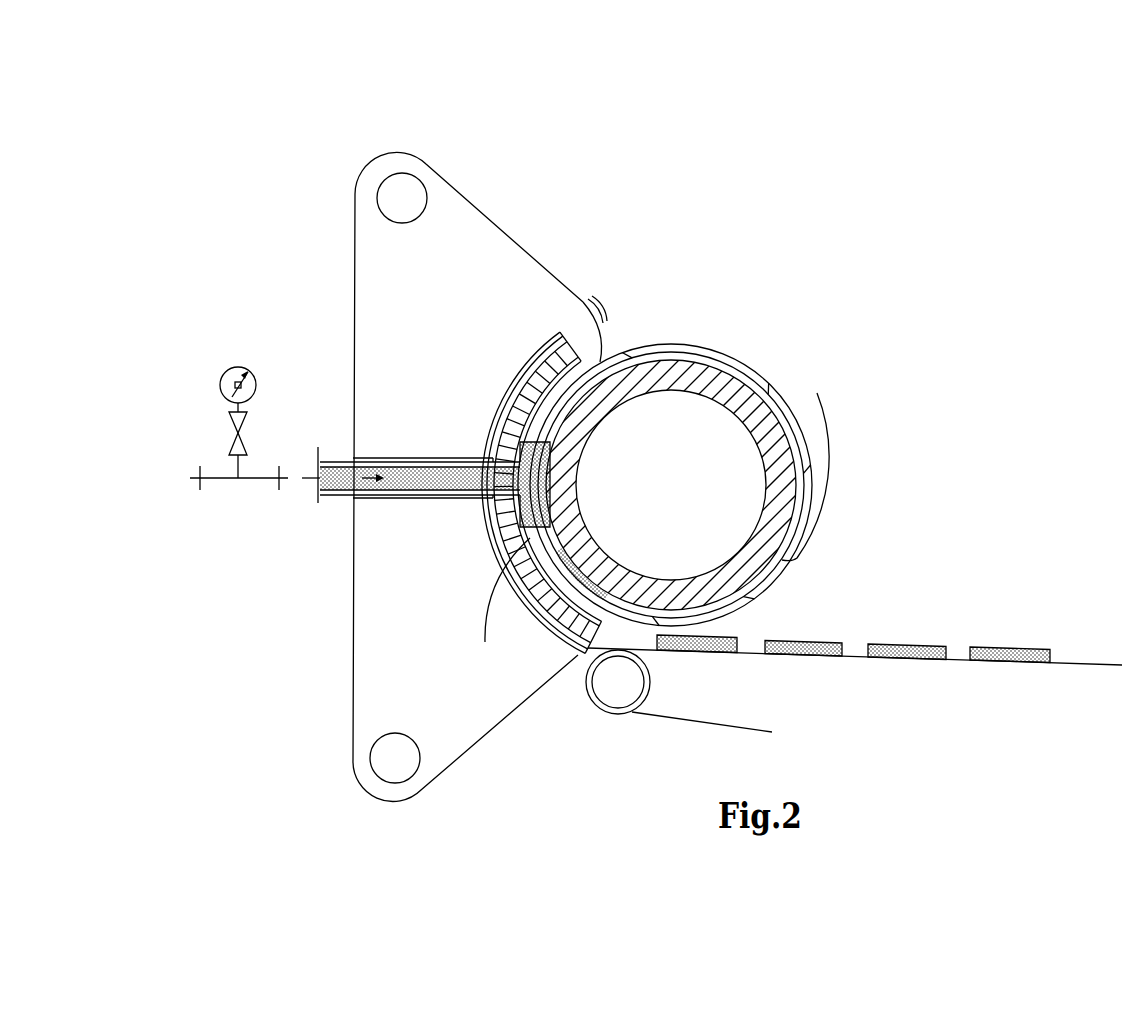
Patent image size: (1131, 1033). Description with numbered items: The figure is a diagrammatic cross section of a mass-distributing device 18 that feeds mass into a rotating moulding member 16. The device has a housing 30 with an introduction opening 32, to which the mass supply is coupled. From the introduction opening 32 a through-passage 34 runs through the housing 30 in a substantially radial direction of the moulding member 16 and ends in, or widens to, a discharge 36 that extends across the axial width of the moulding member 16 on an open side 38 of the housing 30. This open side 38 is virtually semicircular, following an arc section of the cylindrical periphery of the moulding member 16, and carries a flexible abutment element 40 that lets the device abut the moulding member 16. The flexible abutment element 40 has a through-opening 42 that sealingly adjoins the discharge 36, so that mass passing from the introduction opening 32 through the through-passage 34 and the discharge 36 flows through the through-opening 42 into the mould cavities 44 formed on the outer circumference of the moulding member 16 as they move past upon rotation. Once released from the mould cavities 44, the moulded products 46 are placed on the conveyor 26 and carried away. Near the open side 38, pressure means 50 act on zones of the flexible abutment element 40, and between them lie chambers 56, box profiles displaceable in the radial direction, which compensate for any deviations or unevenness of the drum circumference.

The moulding member 16 is at (753, 382).
The mass-distributing device 18 is at (388, 132).
The conveyor 26 is at (962, 661).
The housing 30 is at (353, 265).
The introduction opening 32 is at (333, 500).
The through-passage 34 is at (440, 495).
The discharge 36 is at (493, 460).
The open side 38 is at (523, 626).
The flexible abutment element 40 is at (580, 590).
The through-opening 42 is at (523, 482).
The mould cavities 44 is at (782, 413).
The moulded products 46 is at (1010, 650).
The pressure means 50 is at (562, 333).
The chambers 56 is at (502, 608).